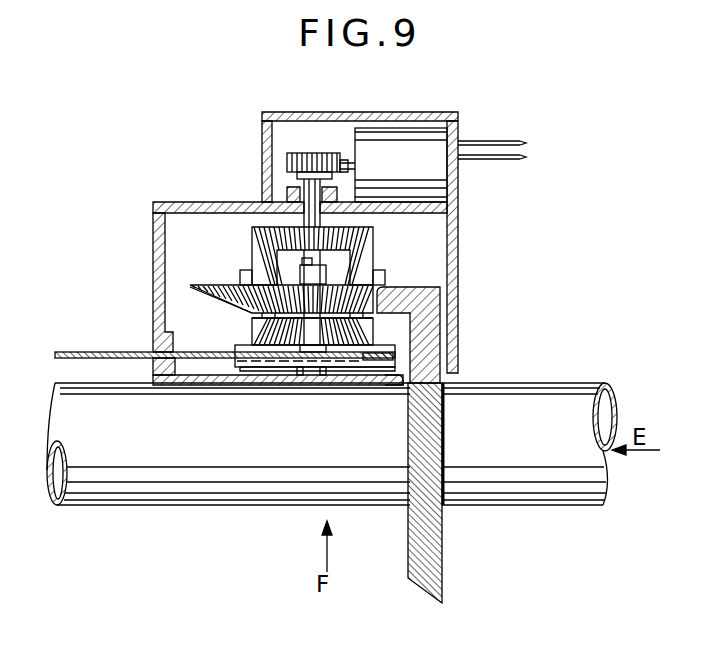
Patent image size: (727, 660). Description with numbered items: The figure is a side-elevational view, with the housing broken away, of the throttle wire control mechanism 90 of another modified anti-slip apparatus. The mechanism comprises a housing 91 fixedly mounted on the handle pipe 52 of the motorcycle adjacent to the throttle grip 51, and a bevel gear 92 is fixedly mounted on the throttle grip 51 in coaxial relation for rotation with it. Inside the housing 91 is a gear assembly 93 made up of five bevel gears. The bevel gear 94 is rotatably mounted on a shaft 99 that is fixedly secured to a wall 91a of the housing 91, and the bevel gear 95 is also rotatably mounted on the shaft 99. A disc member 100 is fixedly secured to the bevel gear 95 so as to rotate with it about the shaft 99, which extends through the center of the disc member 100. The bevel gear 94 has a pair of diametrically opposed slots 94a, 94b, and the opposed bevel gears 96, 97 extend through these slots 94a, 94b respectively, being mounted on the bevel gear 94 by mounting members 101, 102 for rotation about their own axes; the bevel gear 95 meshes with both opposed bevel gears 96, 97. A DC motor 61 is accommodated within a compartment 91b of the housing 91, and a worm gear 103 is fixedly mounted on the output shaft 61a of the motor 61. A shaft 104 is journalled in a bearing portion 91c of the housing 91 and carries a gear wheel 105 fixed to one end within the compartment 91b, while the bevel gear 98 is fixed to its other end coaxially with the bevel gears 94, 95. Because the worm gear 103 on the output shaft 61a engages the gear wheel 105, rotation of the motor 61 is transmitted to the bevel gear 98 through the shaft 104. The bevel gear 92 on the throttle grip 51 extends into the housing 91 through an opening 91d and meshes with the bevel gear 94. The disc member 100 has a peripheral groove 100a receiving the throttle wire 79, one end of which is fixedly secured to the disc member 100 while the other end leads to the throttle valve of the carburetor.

The throttle grip 51 is at (548, 506).
The handle pipe 52 is at (218, 506).
The DC motor 61 is at (418, 128).
The output shaft 61a is at (350, 162).
The throttle wire 79 is at (112, 352).
The throttle wire control mechanism 90 is at (153, 224).
The housing 91 is at (190, 202).
The wall 91a is at (197, 386).
The compartment 91b is at (282, 112).
The bearing portion 91c is at (340, 188).
The opening 91d is at (400, 388).
The bevel gear 92 is at (443, 565).
The gear assembly 93 is at (199, 275).
The bevel gear 94 is at (423, 286).
The slot 94a is at (258, 295).
The slot 94b is at (380, 290).
The bevel gear 95 is at (314, 352).
The bevel gear 96 is at (252, 242).
The bevel gear 97 is at (373, 238).
The bevel gear 98 is at (267, 227).
The shaft 99 is at (298, 272).
The disc member 100 is at (232, 370).
The peripheral groove 100a is at (272, 358).
The mounting member 101 is at (243, 275).
The mounting member 102 is at (385, 278).
The worm gear 103 is at (306, 153).
The shaft 104 is at (300, 178).
The gear wheel 105 is at (290, 160).